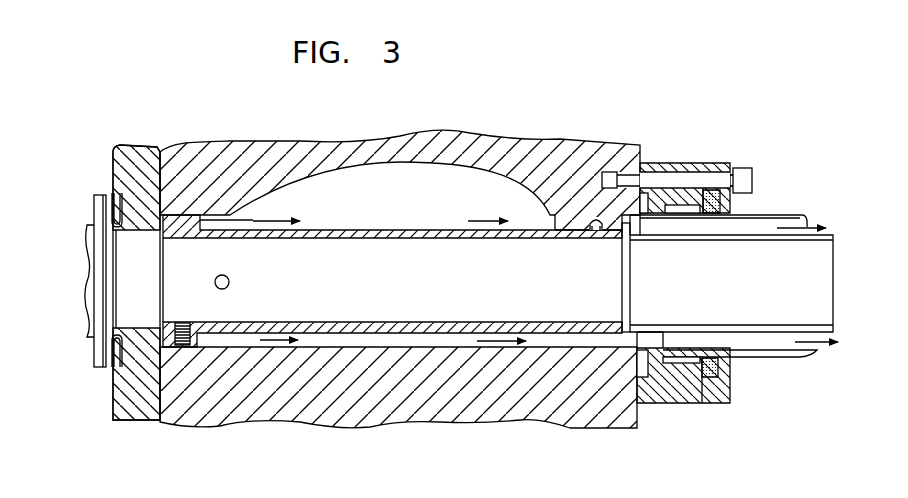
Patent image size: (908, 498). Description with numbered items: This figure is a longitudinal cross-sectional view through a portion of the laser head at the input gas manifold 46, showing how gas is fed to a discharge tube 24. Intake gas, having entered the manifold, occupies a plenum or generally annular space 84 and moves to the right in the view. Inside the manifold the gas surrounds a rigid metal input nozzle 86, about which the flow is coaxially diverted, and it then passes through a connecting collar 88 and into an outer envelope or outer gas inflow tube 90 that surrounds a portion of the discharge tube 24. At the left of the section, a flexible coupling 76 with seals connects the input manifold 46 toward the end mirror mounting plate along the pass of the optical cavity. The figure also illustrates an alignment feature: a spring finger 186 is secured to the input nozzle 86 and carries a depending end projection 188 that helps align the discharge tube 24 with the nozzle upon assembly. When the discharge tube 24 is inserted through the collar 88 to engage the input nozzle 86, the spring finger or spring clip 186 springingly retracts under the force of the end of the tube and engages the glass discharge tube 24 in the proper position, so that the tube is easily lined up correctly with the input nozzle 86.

The plenum 84 is at (355, 178).
The input nozzle 86 is at (417, 229).
The spring finger 186 is at (612, 222).
The end projection 188 is at (645, 240).
The outer gas inflow tube 90 is at (757, 212).
The discharge tube 24 is at (828, 238).
The flexible coupling 76 is at (97, 196).
The input gas manifold 46 is at (222, 415).
The connecting collar 88 is at (658, 402).